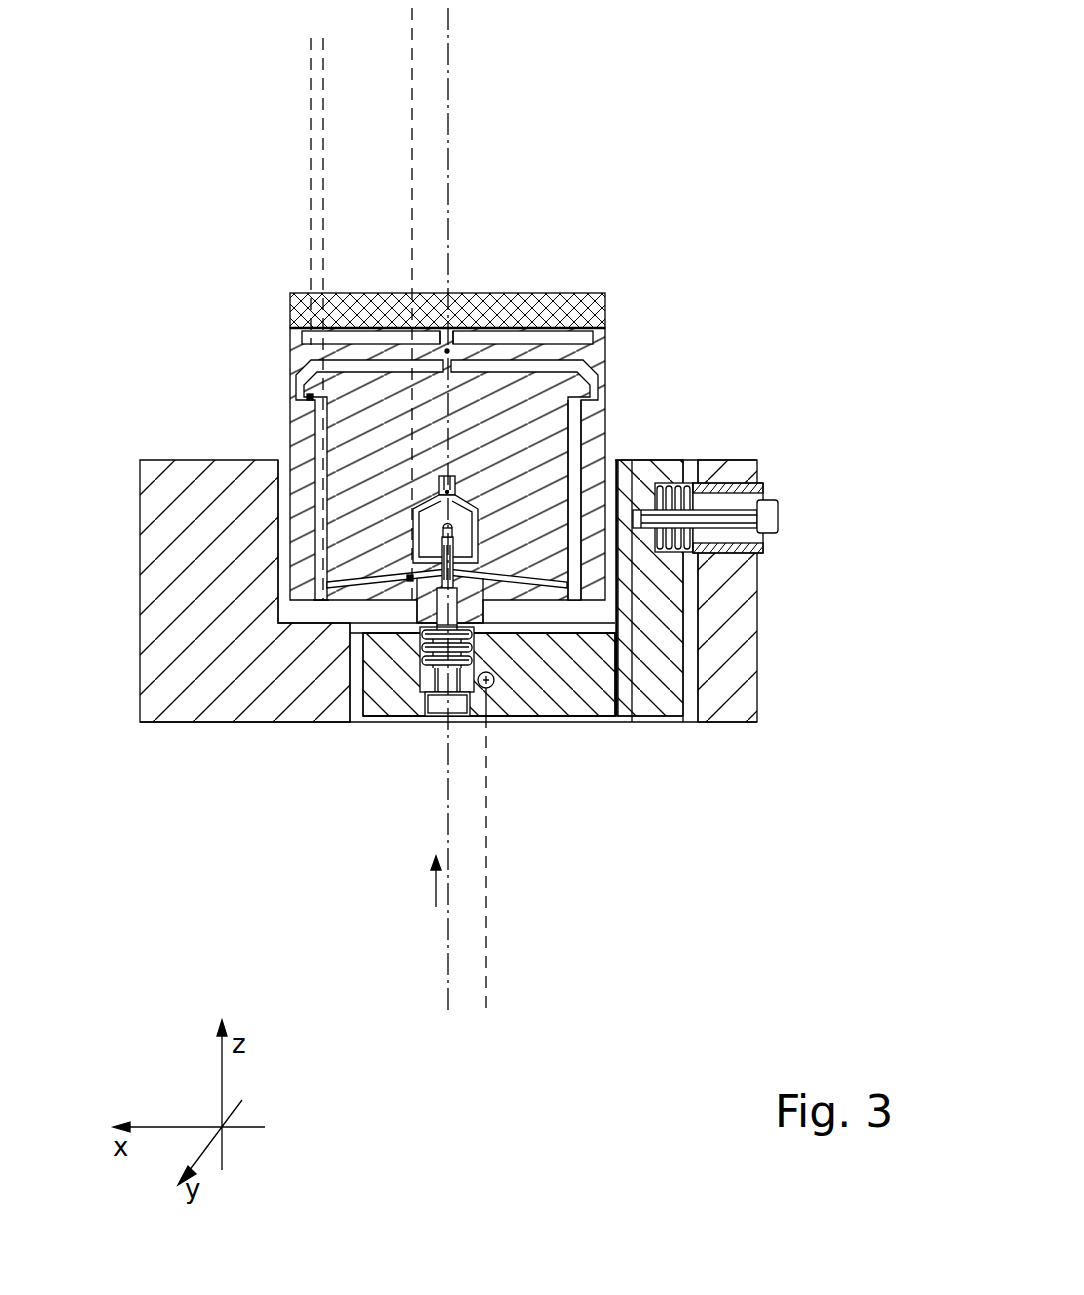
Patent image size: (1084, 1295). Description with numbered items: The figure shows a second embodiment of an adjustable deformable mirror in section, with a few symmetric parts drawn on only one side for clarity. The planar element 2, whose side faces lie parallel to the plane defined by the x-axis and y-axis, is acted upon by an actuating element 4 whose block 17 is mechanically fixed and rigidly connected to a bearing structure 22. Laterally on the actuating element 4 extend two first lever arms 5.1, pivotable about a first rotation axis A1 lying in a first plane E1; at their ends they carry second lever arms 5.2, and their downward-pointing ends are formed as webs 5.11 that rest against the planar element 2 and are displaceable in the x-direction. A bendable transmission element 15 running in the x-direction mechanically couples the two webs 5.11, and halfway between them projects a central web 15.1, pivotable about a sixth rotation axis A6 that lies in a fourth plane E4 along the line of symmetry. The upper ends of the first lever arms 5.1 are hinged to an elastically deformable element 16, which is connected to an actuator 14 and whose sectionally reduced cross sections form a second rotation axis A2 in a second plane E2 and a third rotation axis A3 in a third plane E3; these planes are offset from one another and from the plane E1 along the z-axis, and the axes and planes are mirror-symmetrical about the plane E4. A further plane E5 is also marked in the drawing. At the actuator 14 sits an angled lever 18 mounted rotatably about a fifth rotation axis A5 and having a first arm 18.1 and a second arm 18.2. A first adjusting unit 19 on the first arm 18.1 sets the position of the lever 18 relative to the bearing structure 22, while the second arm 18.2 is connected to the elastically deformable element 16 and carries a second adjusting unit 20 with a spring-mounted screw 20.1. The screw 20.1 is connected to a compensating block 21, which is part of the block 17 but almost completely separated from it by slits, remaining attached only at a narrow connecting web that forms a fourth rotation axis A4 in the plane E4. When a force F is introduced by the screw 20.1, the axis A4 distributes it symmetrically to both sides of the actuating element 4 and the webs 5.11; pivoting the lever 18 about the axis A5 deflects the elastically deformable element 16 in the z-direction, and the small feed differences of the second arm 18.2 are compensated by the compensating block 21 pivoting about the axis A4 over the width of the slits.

The planar element 2 is at (500, 390).
The actuating element 4 is at (550, 461).
The block 17 is at (605, 407).
The first lever arms 5.1 is at (605, 447).
The second lever arm 5.2 is at (605, 360).
The webs 5.11 is at (605, 332).
The actuator 14 is at (491, 698).
The transmission element 15 is at (540, 330).
The central web 15.1 is at (460, 332).
The elastically deformable element 16 is at (580, 700).
The angled lever 18 is at (566, 656).
The first arm 18.1 is at (725, 778).
The second arm 18.2 is at (673, 830).
The first adjusting unit 19 is at (747, 584).
The second adjusting unit 20 is at (367, 688).
The spring-mounted screw 20.1 is at (428, 625).
The compensating block 21 is at (405, 640).
The bearing structure 22 is at (162, 705).
The first rotation axis A1 is at (310, 395).
The second rotation axis A2 is at (322, 602).
The third rotation axis A3 is at (410, 588).
The fourth rotation axis A4 is at (440, 490).
The fifth rotation axis A5 is at (489, 690).
The sixth rotation axis A6 is at (412, 328).
The first plane E1 is at (289, 191).
The second plane E2 is at (345, 319).
The third plane E3 is at (389, 304).
The fourth plane E4 is at (443, 511).
The plane E5 is at (511, 865).
The force F is at (436, 905).